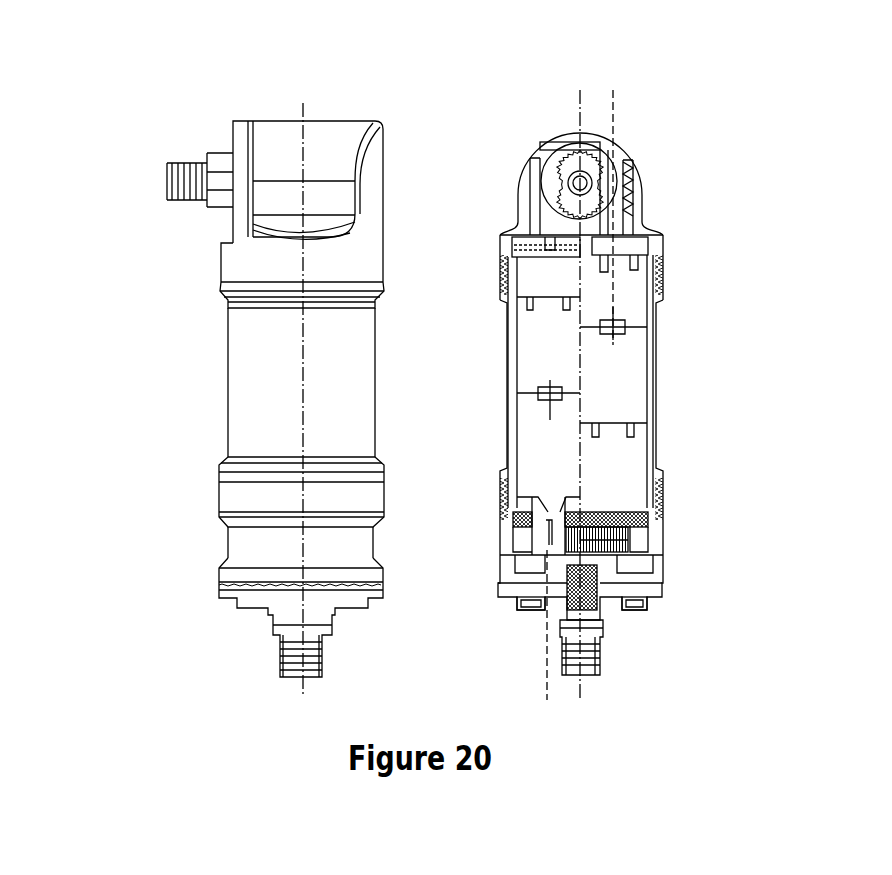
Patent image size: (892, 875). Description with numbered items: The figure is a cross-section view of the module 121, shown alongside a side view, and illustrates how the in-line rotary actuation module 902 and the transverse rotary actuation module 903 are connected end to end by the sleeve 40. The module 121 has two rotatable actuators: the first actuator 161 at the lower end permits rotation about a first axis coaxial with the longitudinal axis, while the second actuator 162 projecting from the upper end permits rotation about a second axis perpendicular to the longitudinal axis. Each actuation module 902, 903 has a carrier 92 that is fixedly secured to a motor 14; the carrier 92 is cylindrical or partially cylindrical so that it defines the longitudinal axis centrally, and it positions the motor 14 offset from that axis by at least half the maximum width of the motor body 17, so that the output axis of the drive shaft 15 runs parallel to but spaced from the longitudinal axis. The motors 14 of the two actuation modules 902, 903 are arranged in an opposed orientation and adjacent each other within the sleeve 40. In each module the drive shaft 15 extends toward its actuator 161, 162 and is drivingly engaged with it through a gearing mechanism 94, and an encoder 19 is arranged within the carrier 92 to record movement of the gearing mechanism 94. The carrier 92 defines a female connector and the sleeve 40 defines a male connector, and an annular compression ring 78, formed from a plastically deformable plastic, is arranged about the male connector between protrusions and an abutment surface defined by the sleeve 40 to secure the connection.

The module 121 is at (166, 132).
The second actuator 162 is at (233, 222).
The carrier 92 is at (361, 265).
The compression ring 78 is at (385, 285).
The sleeve 40 is at (352, 383).
The first actuator 161 is at (385, 597).
The encoder 19 is at (563, 178).
The gearing mechanism 94 is at (560, 180).
The transverse rotary actuation module 903 is at (632, 152).
The drive shaft 15 is at (618, 190).
The motor 14 is at (530, 385).
The body 17 is at (626, 293).
The in-line rotary actuation module 902 is at (655, 582).